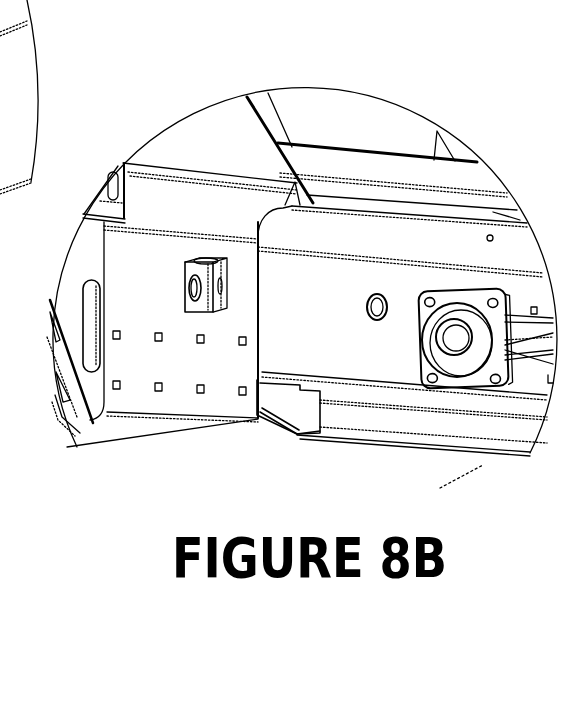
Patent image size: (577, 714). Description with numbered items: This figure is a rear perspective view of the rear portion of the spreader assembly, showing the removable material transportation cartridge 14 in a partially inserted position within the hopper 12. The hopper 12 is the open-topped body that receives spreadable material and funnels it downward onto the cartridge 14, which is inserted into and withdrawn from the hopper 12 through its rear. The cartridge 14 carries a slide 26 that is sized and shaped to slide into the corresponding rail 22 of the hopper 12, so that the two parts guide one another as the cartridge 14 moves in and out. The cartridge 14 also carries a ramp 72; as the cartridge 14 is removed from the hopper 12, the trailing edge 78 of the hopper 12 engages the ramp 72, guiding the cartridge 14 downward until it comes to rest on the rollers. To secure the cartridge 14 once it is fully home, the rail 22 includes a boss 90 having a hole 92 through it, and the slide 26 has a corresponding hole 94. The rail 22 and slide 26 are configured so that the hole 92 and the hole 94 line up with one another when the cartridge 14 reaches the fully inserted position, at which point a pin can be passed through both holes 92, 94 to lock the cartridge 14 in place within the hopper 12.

The hopper 12 is at (188, 121).
The removable material transportation cartridge 14 is at (467, 480).
The rail 22 is at (153, 269).
The slide 26 is at (405, 331).
The ramp 72 is at (290, 443).
The trailing edge 78 is at (260, 427).
The boss 90 is at (211, 298).
The hole 92 is at (182, 297).
The hole 94 is at (363, 324).